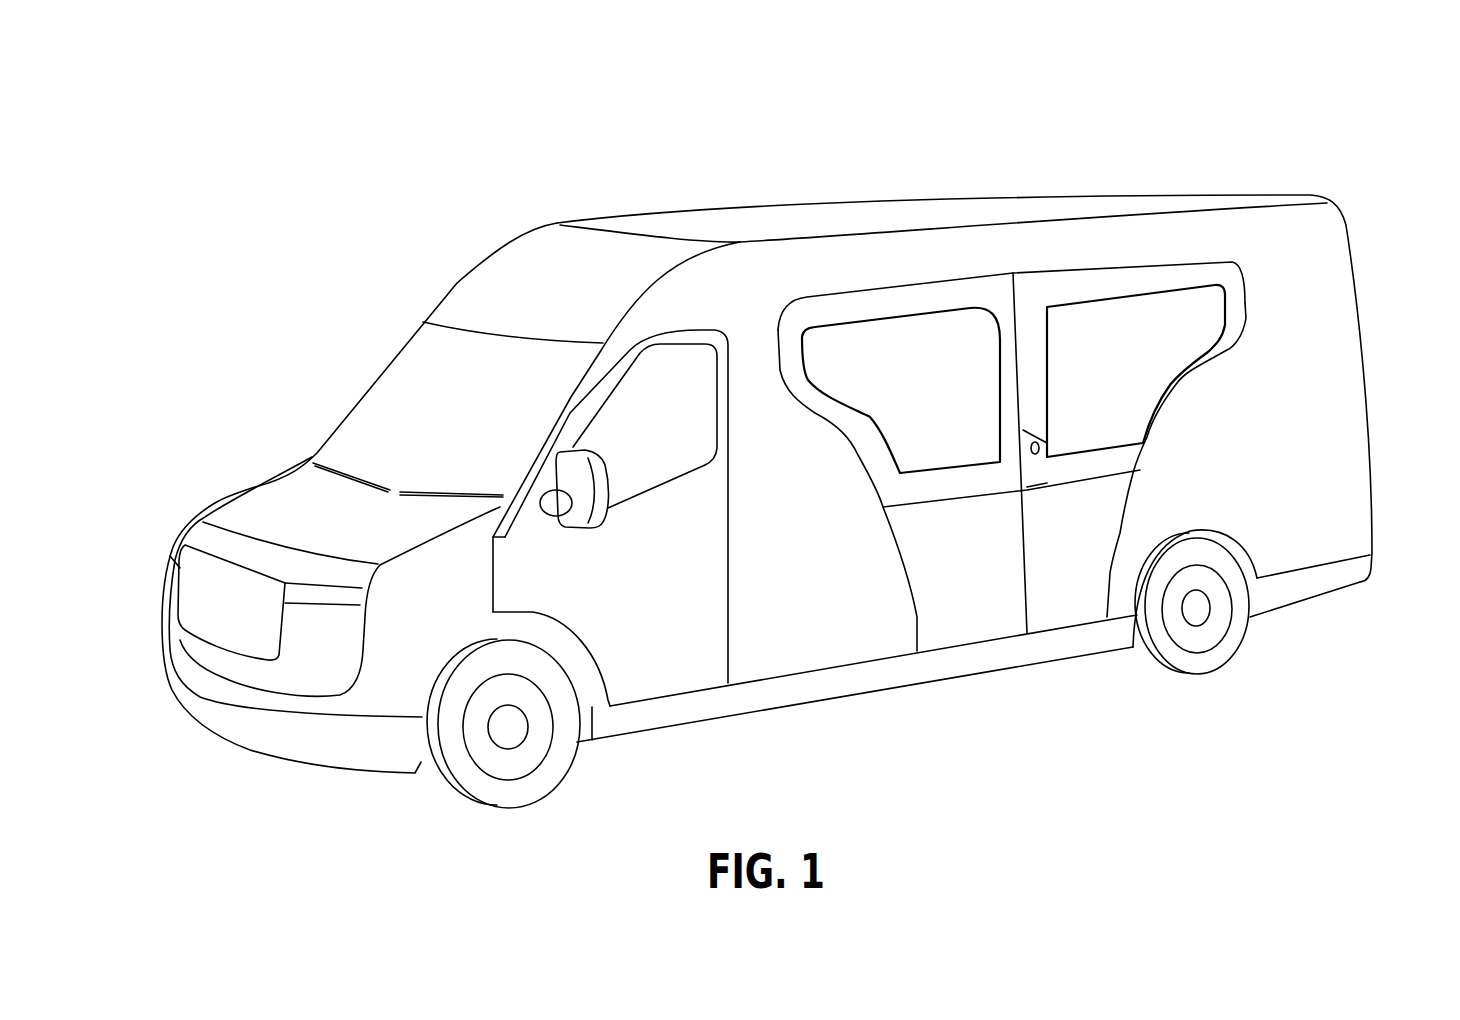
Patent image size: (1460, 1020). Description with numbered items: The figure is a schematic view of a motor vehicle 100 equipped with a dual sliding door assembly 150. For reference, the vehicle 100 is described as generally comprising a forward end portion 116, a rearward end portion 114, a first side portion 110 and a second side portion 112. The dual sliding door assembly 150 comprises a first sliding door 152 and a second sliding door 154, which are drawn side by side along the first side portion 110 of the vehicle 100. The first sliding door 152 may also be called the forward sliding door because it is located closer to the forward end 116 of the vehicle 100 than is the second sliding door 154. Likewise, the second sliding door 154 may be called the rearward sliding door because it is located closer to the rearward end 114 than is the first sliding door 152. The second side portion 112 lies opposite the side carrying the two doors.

The vehicle 100 is at (600, 150).
The first side portion 110 is at (835, 638).
The second side portion 112 is at (369, 351).
The rearward end portion 114 is at (1359, 234).
The forward end portion 116 is at (184, 738).
The dual sliding door assembly 150 is at (1010, 259).
The first sliding door 152 is at (983, 573).
The second sliding door 154 is at (1093, 549).